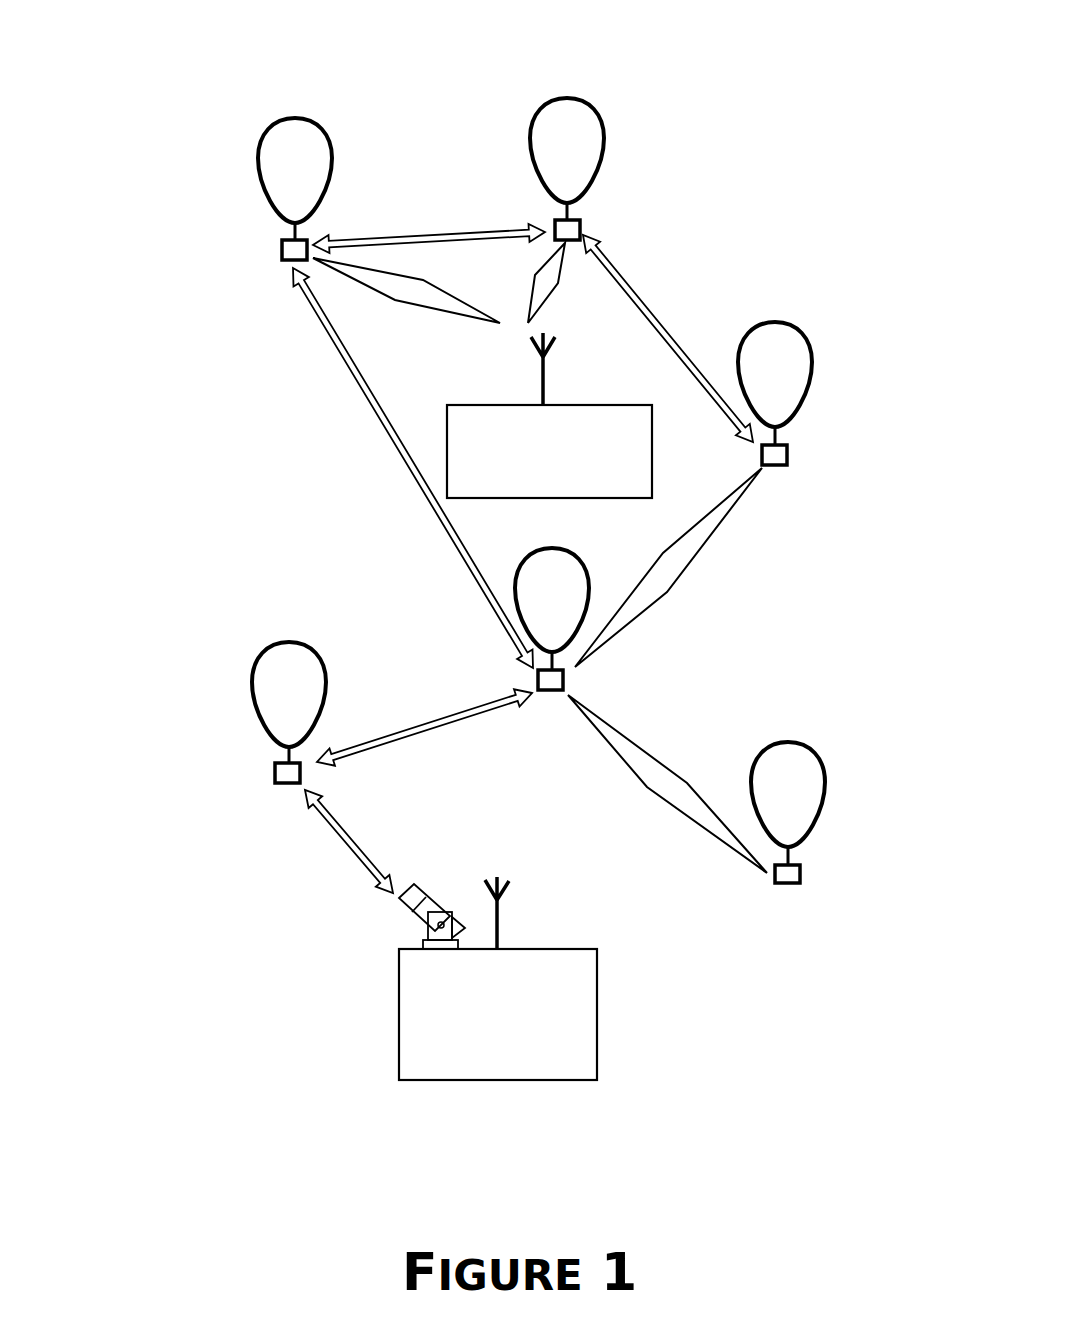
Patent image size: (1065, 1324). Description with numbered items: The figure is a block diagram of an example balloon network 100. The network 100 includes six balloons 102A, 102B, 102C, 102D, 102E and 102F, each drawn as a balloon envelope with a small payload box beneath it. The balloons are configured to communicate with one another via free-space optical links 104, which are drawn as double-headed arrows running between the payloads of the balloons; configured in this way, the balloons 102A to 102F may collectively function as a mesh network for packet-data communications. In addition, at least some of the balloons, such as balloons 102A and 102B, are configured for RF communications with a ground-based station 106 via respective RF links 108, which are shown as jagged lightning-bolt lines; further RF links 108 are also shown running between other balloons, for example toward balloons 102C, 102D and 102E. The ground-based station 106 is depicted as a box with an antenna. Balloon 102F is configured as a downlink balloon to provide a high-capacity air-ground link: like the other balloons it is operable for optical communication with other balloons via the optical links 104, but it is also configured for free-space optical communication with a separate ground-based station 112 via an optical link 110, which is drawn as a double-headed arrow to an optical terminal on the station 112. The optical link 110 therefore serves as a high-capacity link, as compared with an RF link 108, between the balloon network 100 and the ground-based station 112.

The balloon network 100 is at (138, 56).
The balloon 102A is at (291, 116).
The balloon 102B is at (565, 96).
The balloon 102C is at (549, 546).
The balloon 102D is at (786, 740).
The balloon 102E is at (773, 320).
The downlink balloon 102F is at (287, 640).
The free-space optical link 104 is at (430, 233).
The ground-based station 106 is at (549, 415).
The RF link 108 is at (405, 278).
The optical link 110 is at (345, 825).
The ground-based station 112 is at (498, 978).